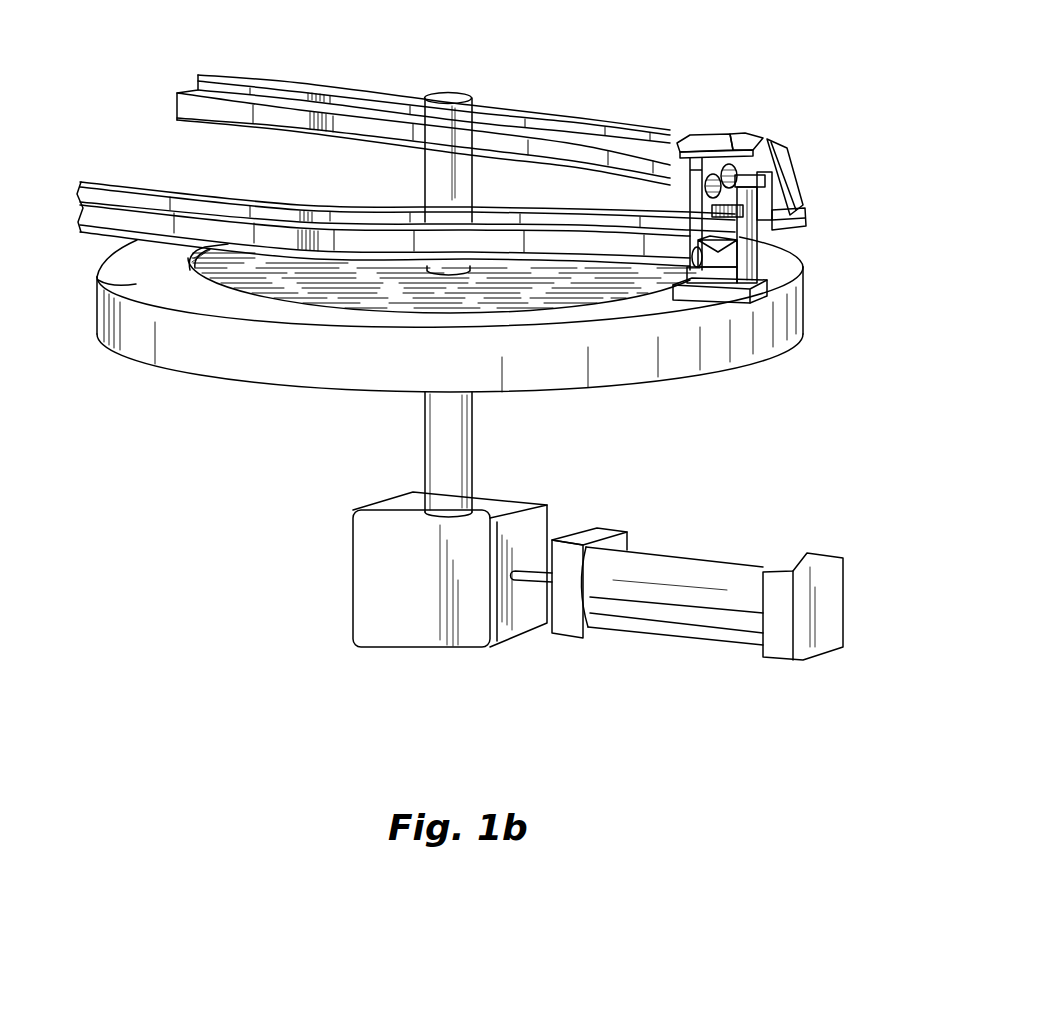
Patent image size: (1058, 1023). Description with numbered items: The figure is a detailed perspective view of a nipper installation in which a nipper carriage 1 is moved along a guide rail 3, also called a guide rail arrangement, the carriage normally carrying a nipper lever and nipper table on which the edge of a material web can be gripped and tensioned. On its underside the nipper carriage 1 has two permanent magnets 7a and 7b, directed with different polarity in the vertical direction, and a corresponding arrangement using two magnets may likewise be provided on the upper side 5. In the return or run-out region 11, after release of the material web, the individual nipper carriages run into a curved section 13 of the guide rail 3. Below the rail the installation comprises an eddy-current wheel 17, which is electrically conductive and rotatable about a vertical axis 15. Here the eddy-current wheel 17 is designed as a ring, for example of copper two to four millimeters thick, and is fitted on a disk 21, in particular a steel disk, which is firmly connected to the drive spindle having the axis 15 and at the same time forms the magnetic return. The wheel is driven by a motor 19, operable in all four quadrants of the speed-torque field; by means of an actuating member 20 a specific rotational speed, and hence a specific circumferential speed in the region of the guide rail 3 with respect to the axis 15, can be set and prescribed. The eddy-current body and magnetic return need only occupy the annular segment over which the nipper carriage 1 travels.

The nipper carriage 1 is at (767, 175).
The guide rail 3 is at (522, 117).
The upper side 5 is at (768, 142).
The permanent magnet 7a is at (717, 134).
The permanent magnet 7b is at (735, 136).
The return or run-out region 11 is at (816, 379).
The curved section 13 is at (592, 240).
The vertical axis 15 is at (432, 168).
The eddy-current wheel 17 is at (136, 241).
The motor 19 is at (402, 622).
The actuating member 20 is at (682, 652).
The disk 21 is at (197, 347).